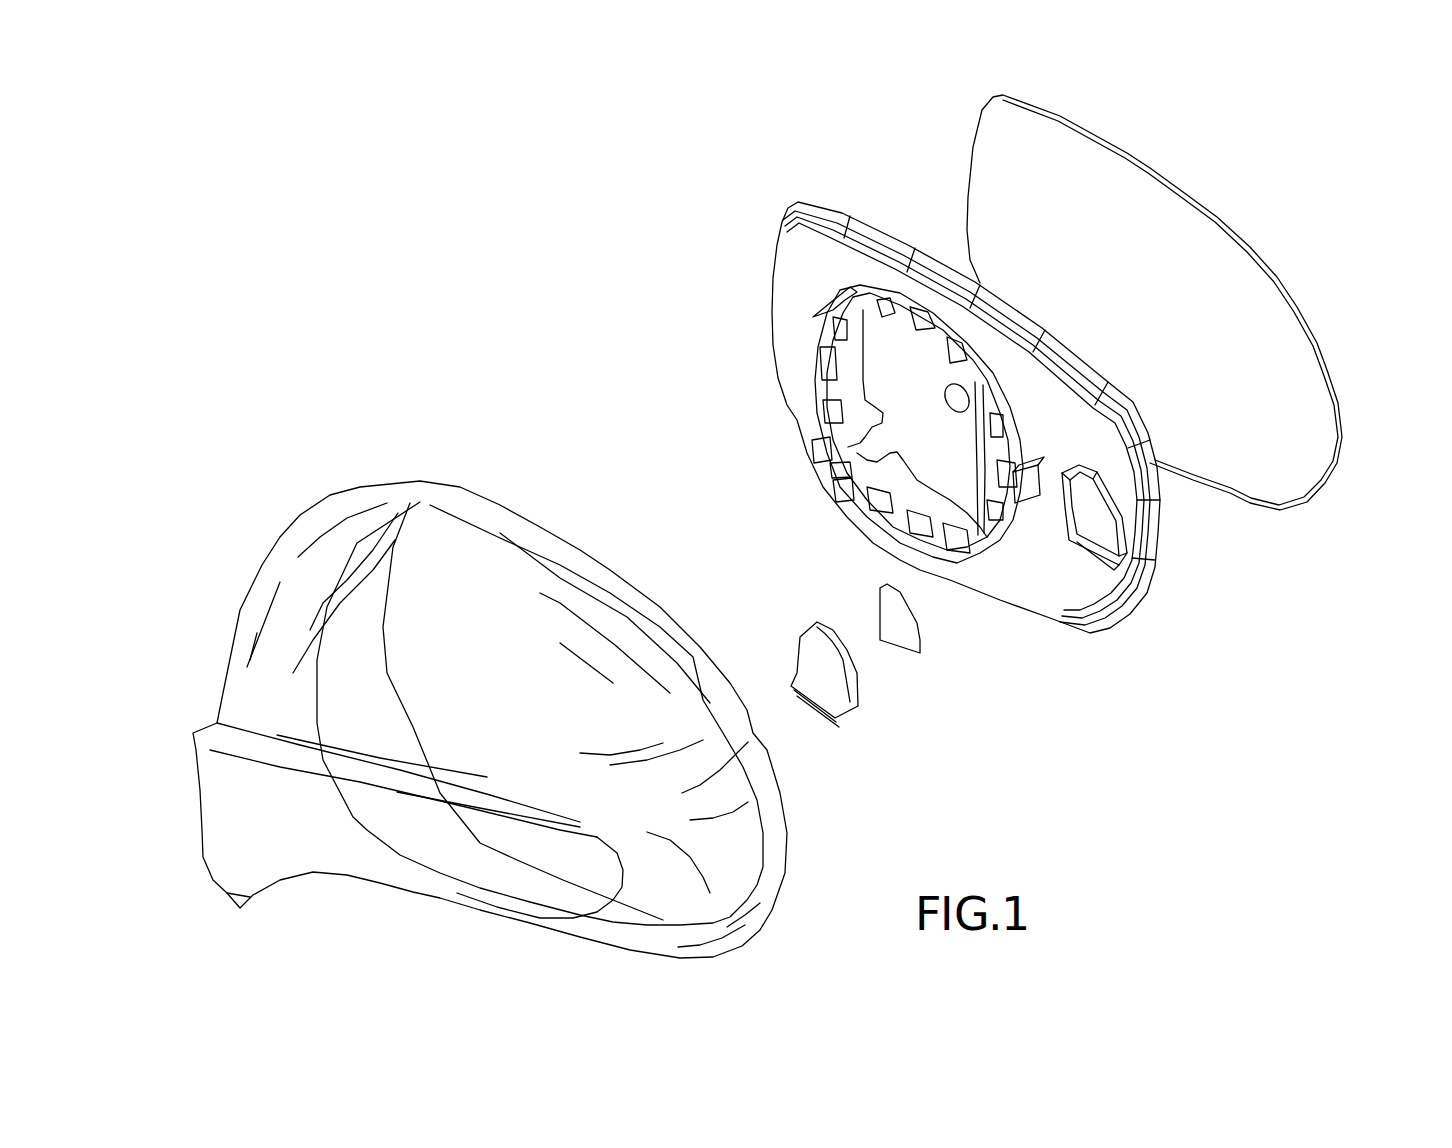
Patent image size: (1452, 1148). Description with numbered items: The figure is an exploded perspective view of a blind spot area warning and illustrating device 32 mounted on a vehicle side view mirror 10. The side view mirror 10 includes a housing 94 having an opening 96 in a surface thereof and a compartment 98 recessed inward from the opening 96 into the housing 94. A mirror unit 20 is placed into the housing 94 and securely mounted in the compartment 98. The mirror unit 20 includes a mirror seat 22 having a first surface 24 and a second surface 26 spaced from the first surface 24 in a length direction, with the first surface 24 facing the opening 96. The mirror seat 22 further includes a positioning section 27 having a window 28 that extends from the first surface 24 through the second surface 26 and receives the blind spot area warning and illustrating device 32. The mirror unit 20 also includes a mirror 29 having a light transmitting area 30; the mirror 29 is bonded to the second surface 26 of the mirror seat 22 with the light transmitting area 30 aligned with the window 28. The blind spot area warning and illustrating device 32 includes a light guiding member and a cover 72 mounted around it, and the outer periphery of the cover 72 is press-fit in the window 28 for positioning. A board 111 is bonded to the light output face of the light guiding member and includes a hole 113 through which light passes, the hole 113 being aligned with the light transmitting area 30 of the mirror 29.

The side view mirror 10 is at (452, 238).
The mirror unit 20 is at (888, 45).
The mirror seat 22 is at (800, 210).
The first surface 24 is at (790, 296).
The second surface 26 is at (900, 237).
The positioning section 27 is at (1125, 557).
The window 28 is at (1107, 523).
The mirror 29 is at (980, 105).
The light transmitting area 30 is at (1292, 387).
The blind spot area warning and illustrating device 32 is at (872, 723).
The cover 72 is at (797, 655).
The housing 94 is at (280, 532).
The opening 96 is at (497, 540).
The compartment 98 is at (318, 660).
The board 111 is at (924, 653).
The hole 113 is at (902, 624).